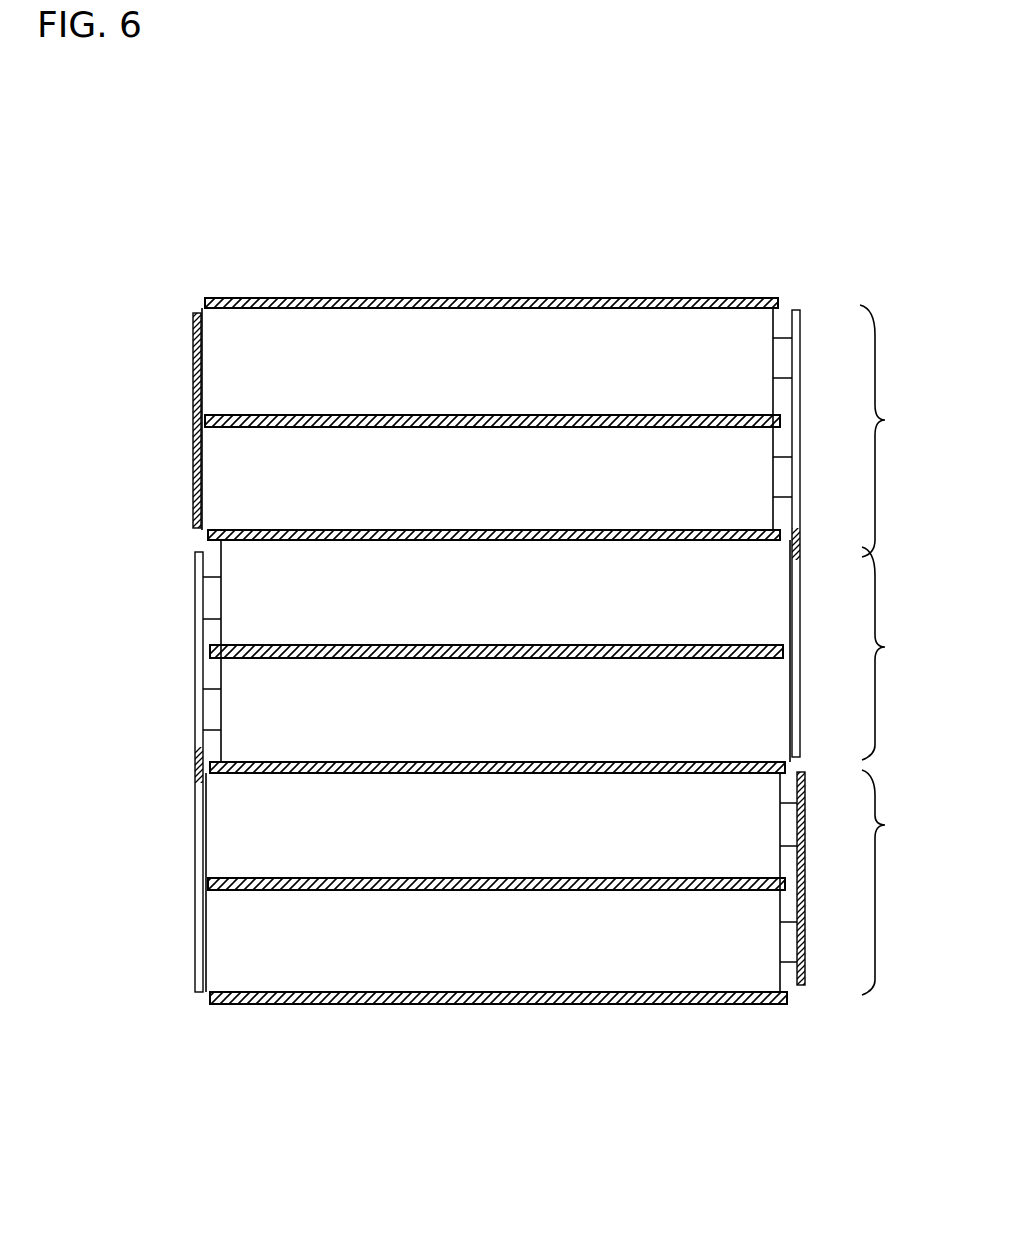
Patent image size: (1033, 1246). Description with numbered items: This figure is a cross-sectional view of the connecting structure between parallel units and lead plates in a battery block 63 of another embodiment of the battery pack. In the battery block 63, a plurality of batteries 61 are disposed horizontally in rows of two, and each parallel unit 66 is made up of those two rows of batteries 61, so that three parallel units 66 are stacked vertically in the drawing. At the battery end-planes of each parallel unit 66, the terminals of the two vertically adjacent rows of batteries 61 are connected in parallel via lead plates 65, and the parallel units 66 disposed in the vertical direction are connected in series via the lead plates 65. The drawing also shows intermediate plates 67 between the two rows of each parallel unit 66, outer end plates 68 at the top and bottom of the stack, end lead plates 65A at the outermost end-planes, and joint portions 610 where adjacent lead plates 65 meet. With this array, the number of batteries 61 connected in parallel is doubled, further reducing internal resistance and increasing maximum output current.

The battery block 63 is at (210, 248).
The end plate 68 is at (473, 298).
The intermediate plate 67 is at (592, 427).
The parallel unit 66 is at (564, 650).
The battery 61 is at (470, 393).
The lead plate 65 is at (800, 410).
The joint portion of side bar 610 is at (835, 517).
The end side bar 65A is at (193, 398).